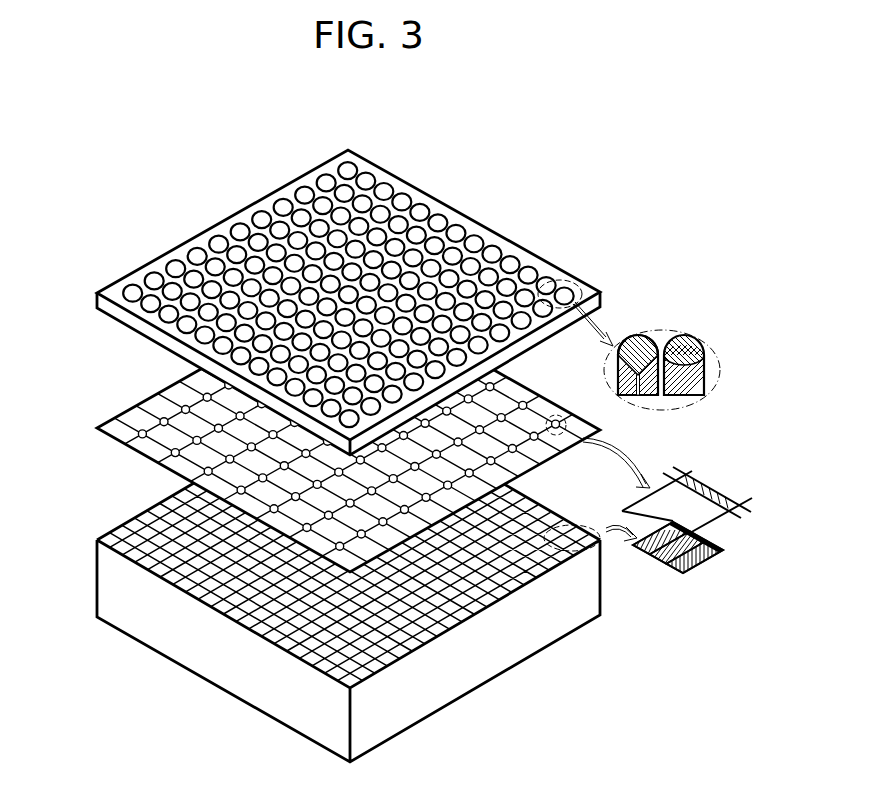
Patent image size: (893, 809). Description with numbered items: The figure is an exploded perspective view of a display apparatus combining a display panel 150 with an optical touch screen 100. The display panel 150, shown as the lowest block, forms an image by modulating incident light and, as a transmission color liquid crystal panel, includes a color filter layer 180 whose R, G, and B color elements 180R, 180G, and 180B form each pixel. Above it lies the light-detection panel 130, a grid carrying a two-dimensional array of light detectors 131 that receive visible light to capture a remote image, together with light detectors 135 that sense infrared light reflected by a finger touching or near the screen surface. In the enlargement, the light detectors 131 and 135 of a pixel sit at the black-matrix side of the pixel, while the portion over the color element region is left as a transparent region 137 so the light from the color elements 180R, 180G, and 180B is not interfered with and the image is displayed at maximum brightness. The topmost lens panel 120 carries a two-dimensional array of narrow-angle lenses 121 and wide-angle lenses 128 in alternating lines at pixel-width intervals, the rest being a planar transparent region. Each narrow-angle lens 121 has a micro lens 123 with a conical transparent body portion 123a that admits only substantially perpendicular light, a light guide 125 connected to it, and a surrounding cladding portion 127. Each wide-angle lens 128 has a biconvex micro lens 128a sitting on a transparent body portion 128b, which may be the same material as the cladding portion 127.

The optical touch screen 100 is at (78, 266).
The lens panel 120 is at (198, 228).
The narrow-angle lens 121 is at (630, 330).
The micro lens 123 is at (650, 342).
The conical transparent body portion 123a is at (628, 353).
The light guide 125 is at (638, 397).
The cladding portion 127 is at (620, 388).
The wide-angle lens 128 is at (697, 330).
The micro lens 128a is at (704, 356).
The transparent body portion 128b is at (703, 396).
The light-detection panel 130 is at (109, 399).
The light detector 131 is at (687, 480).
The light detector 135 is at (710, 504).
The transparent region 137 is at (713, 520).
The display panel 150 is at (89, 580).
The color filter layer 180 is at (115, 536).
The R color element 180R is at (638, 541).
The G color element 180G is at (655, 562).
The B color element 180B is at (693, 562).